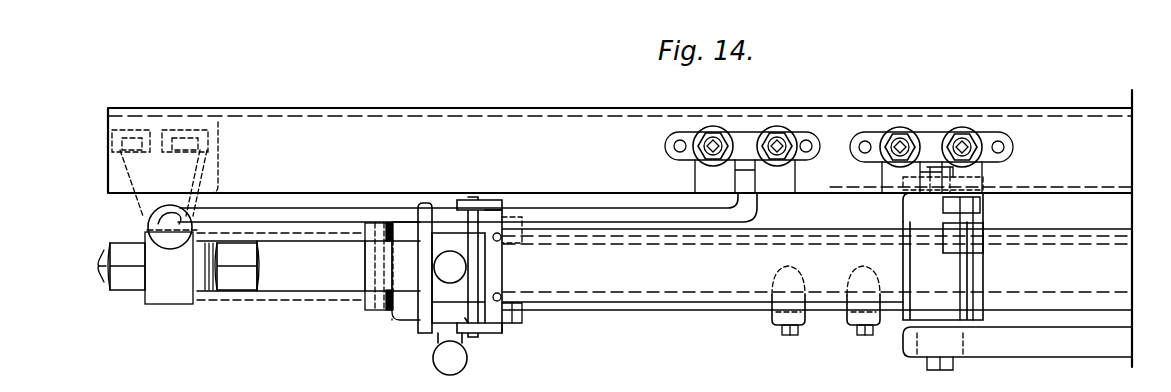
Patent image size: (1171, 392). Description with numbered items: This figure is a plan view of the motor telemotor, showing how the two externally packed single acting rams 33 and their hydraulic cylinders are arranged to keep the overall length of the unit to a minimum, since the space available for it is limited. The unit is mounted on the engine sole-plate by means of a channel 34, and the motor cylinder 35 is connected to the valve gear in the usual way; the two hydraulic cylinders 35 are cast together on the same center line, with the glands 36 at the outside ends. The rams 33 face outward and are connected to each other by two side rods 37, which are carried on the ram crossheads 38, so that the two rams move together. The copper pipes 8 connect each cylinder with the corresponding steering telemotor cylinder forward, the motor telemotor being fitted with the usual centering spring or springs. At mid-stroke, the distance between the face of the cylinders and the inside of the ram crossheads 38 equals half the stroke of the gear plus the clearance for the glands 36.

The copper pipes 8 is at (1018, 218).
The rams 33 is at (327, 240).
The channel 34 is at (620, 228).
The motor cylinder 35 is at (817, 268).
The glands 36 is at (392, 225).
The side rods 37 is at (308, 266).
The ram crossheads 38 is at (147, 254).